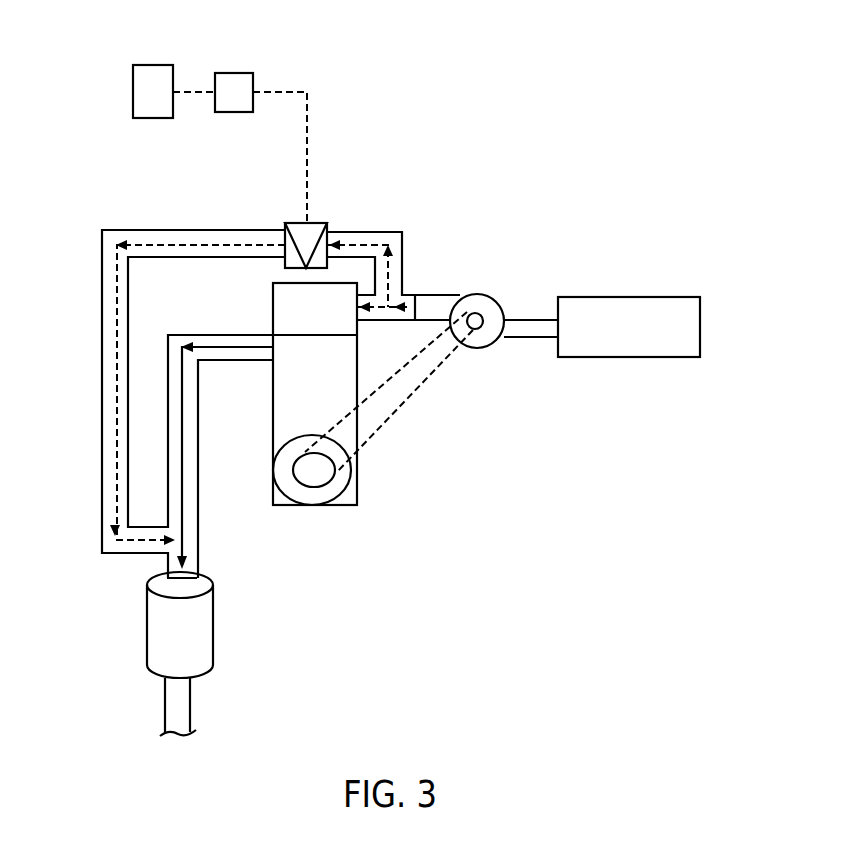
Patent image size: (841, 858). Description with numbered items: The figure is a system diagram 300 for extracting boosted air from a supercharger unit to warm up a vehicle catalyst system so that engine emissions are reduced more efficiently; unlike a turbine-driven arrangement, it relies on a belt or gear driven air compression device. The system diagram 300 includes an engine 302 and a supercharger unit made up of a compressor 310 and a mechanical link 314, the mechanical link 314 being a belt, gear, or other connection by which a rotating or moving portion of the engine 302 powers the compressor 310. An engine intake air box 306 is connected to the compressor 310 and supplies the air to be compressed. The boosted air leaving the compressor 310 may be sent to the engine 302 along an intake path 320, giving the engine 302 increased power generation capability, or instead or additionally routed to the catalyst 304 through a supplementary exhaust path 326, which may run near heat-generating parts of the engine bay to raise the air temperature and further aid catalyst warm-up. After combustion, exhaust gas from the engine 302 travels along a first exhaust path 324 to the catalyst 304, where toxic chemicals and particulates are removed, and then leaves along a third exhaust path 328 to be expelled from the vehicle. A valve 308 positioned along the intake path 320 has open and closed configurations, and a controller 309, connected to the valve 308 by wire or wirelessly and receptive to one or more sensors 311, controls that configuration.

The system diagram 300 is at (583, 165).
The engine 302 is at (357, 490).
The catalyst 304 is at (213, 630).
The engine intake air box 306 is at (628, 297).
The valve 308 is at (300, 222).
The controller 309 is at (240, 73).
The compressor 310 is at (488, 344).
The sensors 311 is at (160, 65).
The mechanical link 314 is at (405, 406).
The intake path 320 is at (404, 293).
The first exhaust path 324 is at (198, 463).
The supplementary exhaust path 326 is at (102, 387).
The third exhaust path 328 is at (190, 700).